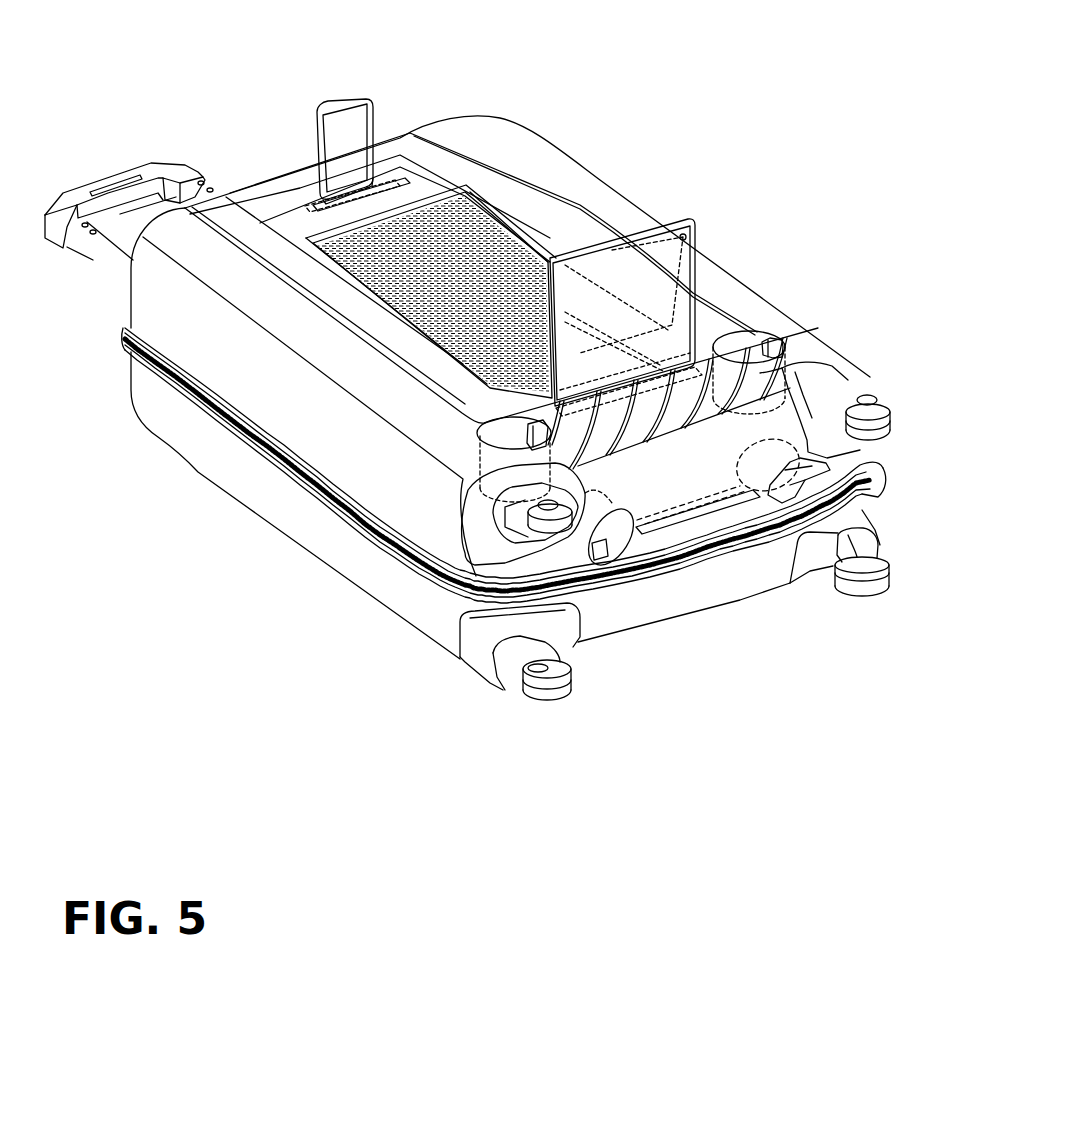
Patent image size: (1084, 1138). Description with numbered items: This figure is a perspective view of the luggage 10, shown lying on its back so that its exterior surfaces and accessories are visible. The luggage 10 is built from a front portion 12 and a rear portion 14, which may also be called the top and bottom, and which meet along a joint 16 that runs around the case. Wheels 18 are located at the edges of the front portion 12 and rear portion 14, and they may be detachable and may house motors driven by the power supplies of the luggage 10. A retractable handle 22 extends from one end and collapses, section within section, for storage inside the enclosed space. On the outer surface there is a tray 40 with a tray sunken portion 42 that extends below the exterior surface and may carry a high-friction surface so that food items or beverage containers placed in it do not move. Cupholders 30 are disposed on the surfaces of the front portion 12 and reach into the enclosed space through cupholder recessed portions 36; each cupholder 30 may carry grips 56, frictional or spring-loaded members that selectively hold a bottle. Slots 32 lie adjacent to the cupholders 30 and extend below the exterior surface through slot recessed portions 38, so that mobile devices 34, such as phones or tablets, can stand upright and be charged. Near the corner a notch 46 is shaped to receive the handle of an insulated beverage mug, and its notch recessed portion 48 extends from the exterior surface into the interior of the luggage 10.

The luggage 10 is at (771, 121).
The front portion 12 is at (576, 160).
The rear portion 14 is at (130, 403).
The joint 16 is at (255, 441).
The wheels 18 is at (530, 682).
The retractable handle 22 is at (80, 190).
The cupholder 30 is at (758, 327).
The slot 32 is at (662, 535).
The mobile device 34 is at (353, 108).
The cupholder recessed portion 36 is at (560, 430).
The slot recessed portion 38 is at (718, 547).
The tray 40 is at (547, 235).
The tray sunken portion 42 is at (473, 243).
The notch 46 is at (800, 478).
The notch recessed portion 48 is at (822, 450).
The grips 56 is at (776, 338).